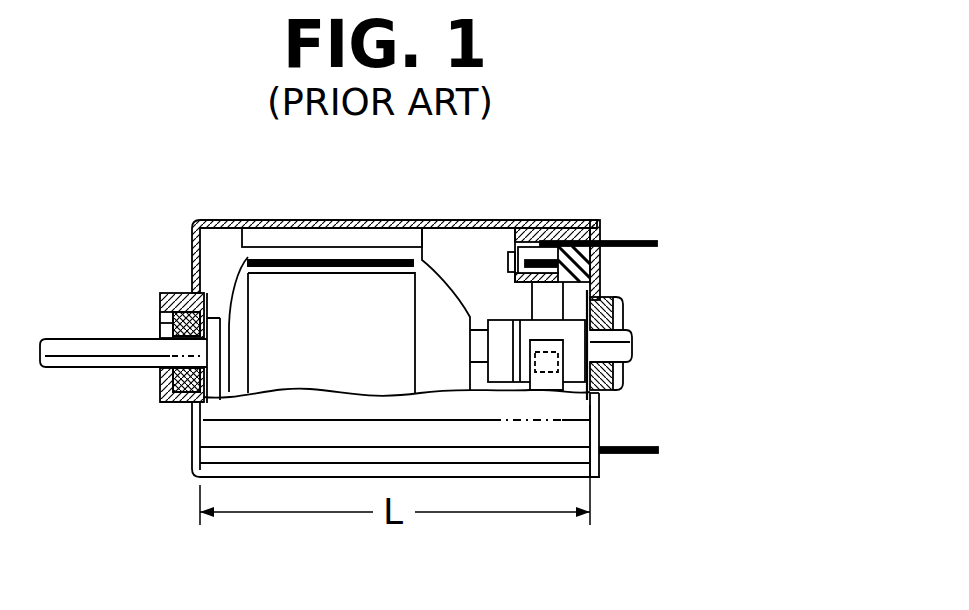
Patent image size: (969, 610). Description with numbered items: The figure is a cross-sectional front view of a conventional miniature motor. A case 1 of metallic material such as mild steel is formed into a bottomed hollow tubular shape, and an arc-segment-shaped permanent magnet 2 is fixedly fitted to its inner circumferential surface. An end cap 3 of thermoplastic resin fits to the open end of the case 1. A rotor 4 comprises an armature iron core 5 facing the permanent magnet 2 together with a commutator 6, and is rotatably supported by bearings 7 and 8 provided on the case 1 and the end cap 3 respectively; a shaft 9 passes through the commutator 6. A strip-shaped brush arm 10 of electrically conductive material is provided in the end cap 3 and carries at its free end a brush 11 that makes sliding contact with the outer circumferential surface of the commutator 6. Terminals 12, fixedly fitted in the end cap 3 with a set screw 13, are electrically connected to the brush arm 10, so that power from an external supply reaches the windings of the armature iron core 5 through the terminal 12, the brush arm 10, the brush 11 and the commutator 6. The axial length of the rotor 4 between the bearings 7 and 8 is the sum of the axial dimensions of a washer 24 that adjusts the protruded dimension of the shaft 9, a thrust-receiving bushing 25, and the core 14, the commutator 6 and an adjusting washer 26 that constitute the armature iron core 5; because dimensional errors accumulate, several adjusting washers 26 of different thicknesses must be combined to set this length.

The case 1 is at (228, 222).
The permanent magnet 2 is at (306, 238).
The end cap 3 is at (603, 232).
The rotor 4 is at (440, 260).
The armature iron core 5 is at (366, 256).
The core 14 is at (330, 263).
The commutator 6 is at (565, 328).
The bearing 7 is at (180, 294).
The bearing 8 is at (612, 392).
The shaft 9 is at (88, 350).
The brush arm 10 is at (600, 342).
The brush 11 is at (558, 362).
The terminal 12 is at (660, 243).
The set screw 13 is at (540, 258).
The washer 24 is at (167, 407).
The thrust-receiving bushing 25 is at (212, 358).
The adjusting washer 26 is at (597, 398).